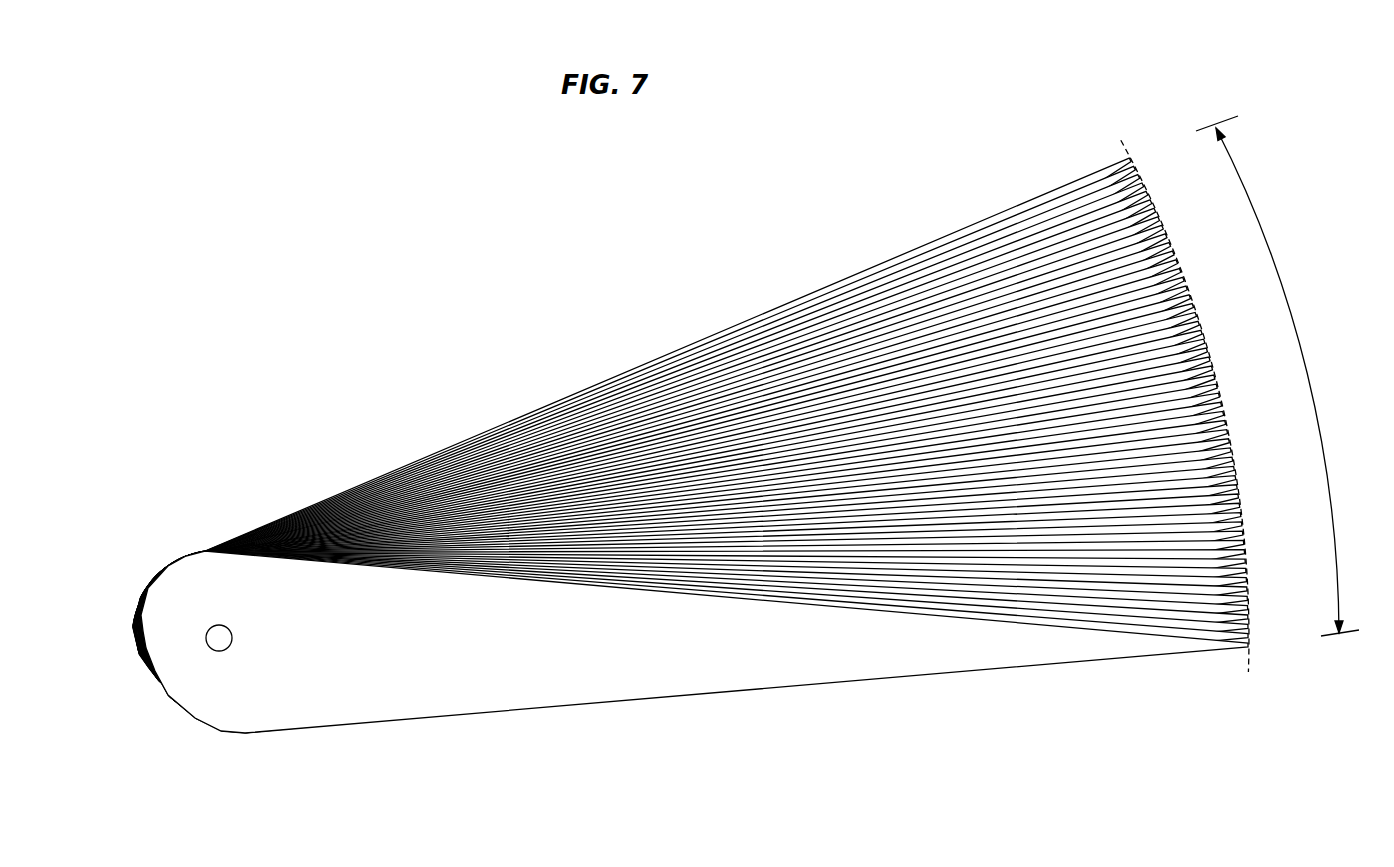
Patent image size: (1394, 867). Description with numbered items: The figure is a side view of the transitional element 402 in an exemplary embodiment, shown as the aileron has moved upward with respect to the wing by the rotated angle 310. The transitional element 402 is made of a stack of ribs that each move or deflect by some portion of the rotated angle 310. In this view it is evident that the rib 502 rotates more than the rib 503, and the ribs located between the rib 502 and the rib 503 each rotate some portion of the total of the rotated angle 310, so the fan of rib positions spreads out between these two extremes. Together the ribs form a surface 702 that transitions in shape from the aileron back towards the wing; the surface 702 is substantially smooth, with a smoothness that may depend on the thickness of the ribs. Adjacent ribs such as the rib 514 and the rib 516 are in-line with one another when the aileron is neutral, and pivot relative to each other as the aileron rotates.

The transitional element 402 is at (691, 418).
The surface 702 is at (691, 418).
The rib 502 is at (965, 218).
The rib 503 is at (965, 660).
The rib 514 is at (1162, 322).
The rib 516 is at (1168, 316).
The rotated angle 310 is at (1310, 407).